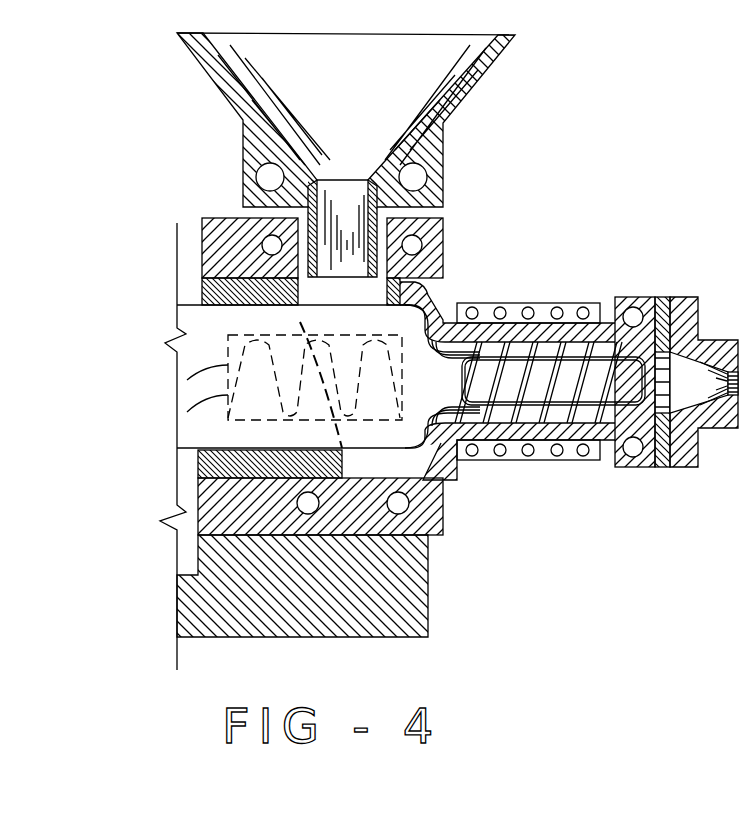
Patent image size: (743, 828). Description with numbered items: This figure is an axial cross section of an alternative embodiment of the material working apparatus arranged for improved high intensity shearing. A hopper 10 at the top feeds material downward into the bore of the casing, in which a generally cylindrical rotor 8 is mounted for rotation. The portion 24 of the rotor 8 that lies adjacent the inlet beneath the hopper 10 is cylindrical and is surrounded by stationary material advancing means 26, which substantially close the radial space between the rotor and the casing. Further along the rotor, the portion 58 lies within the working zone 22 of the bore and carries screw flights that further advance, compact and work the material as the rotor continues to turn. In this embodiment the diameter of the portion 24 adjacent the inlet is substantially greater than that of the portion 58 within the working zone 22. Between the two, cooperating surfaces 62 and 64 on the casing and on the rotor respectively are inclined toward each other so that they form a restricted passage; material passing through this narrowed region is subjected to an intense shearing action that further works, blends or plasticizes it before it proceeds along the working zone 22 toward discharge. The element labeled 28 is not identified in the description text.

The hopper 10 is at (346, 120).
The stationary material advancing means 26 is at (200, 296).
The feed passage 28 is at (302, 300).
The portion of the rotor 24 is at (313, 320).
The cooperating surface 64 is at (418, 316).
The cooperating surface 62 is at (445, 288).
The working zone 22 is at (514, 347).
The portion of the rotor 58 is at (567, 377).
The rotor 8 is at (413, 398).